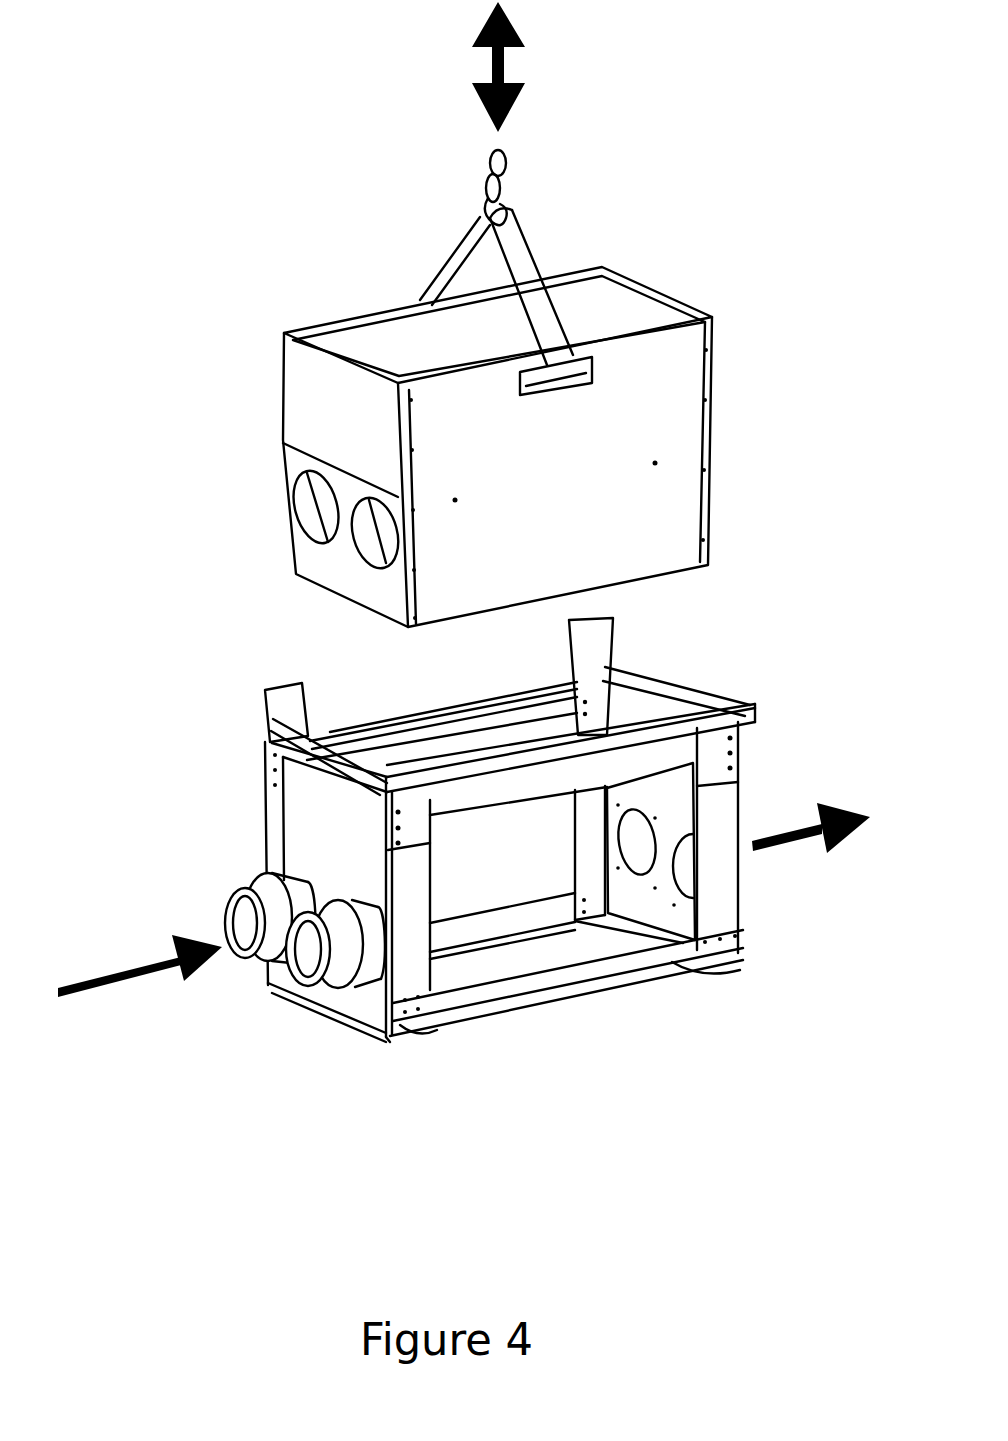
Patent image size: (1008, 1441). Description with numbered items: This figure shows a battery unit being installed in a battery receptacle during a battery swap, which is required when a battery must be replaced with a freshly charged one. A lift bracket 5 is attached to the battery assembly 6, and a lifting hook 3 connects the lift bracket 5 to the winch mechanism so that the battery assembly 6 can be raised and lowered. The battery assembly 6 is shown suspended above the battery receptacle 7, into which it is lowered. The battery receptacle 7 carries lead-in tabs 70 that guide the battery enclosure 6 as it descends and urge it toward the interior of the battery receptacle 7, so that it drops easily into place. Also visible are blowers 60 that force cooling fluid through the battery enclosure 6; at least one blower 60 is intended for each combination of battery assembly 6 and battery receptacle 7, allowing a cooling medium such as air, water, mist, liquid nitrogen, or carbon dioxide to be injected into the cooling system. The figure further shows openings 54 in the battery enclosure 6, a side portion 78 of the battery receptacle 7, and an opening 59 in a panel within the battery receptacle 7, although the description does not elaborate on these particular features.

The lifting hook 3 is at (480, 180).
The lift bracket 5 is at (528, 255).
The battery assembly 6 is at (645, 490).
The container openings 54 is at (290, 507).
The battery receptacle 7 is at (325, 845).
The lead-in tabs 70 is at (282, 703).
The side post 78 is at (720, 822).
The panel opening 59 is at (640, 847).
The blower 60 is at (353, 948).